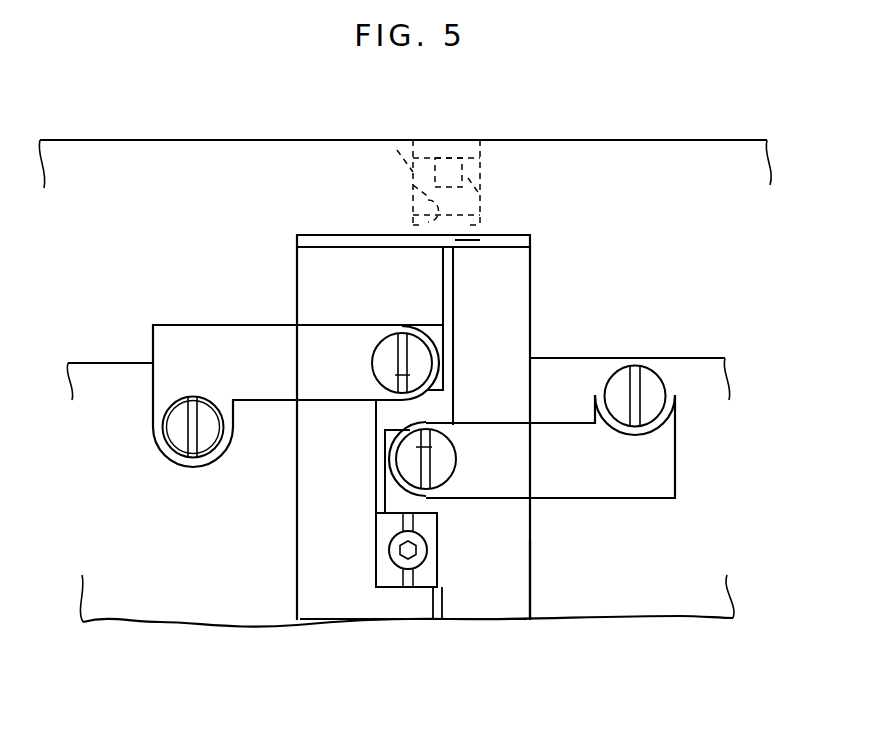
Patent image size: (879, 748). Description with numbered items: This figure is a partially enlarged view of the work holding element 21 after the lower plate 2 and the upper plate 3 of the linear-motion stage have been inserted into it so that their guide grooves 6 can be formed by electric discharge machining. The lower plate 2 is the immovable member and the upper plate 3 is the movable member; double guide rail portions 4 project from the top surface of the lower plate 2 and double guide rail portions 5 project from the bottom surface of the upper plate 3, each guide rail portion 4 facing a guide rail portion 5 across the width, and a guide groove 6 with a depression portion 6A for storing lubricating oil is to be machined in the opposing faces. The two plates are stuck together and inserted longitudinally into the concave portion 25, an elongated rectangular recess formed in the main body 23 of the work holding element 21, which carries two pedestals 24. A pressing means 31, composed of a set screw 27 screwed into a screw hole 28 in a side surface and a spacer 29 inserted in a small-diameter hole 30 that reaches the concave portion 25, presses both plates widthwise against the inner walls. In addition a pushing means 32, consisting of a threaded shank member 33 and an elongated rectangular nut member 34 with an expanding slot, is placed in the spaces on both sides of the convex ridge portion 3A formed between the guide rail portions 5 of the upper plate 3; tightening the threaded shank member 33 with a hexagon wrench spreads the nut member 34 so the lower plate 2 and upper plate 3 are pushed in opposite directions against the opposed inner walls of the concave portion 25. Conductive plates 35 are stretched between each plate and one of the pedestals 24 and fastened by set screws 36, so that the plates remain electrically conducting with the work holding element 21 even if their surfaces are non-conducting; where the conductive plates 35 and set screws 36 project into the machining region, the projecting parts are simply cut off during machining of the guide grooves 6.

The lower plate 2 is at (503, 603).
The upper plate 3 is at (310, 625).
The convex ridge portion 3A is at (405, 608).
The guide rail portion 4 is at (393, 495).
The guide rail portion 5 is at (412, 272).
The guide groove 6 is at (383, 395).
The depression portion 6A is at (408, 330).
The work holding element 21 is at (117, 153).
The main body 23 is at (680, 157).
The pedestal 24 is at (120, 608).
The concave portion 25 is at (524, 602).
The set screw 27 is at (422, 156).
The screw hole 28 is at (488, 162).
The spacer 29 is at (463, 240).
The small-diameter hole 30 is at (395, 142).
The pressing means 31 is at (464, 150).
The pushing means 32 is at (390, 580).
The threaded shank member 33 is at (423, 552).
The nut member 34 is at (378, 568).
The conductive plate 35 is at (187, 325).
The set screw 36 is at (387, 333).